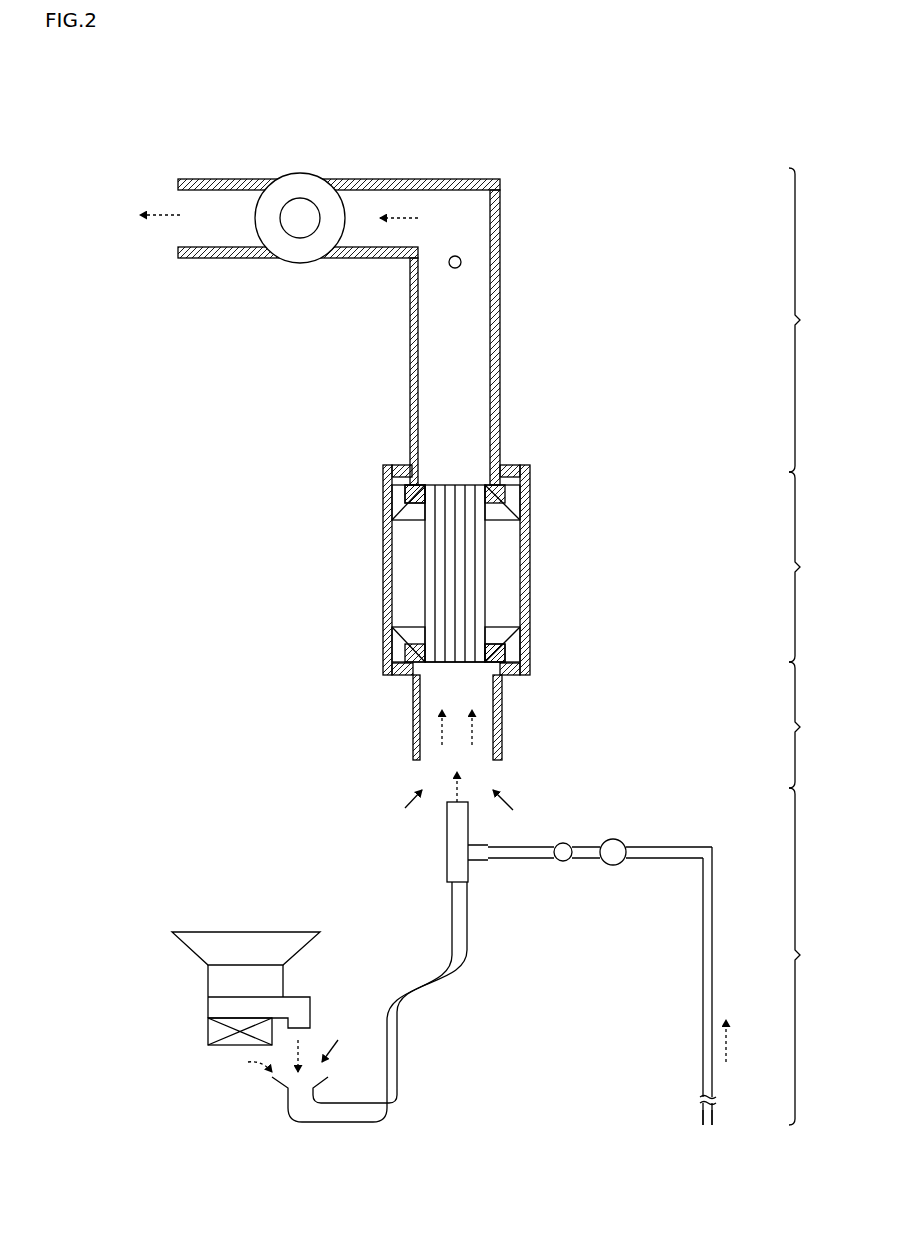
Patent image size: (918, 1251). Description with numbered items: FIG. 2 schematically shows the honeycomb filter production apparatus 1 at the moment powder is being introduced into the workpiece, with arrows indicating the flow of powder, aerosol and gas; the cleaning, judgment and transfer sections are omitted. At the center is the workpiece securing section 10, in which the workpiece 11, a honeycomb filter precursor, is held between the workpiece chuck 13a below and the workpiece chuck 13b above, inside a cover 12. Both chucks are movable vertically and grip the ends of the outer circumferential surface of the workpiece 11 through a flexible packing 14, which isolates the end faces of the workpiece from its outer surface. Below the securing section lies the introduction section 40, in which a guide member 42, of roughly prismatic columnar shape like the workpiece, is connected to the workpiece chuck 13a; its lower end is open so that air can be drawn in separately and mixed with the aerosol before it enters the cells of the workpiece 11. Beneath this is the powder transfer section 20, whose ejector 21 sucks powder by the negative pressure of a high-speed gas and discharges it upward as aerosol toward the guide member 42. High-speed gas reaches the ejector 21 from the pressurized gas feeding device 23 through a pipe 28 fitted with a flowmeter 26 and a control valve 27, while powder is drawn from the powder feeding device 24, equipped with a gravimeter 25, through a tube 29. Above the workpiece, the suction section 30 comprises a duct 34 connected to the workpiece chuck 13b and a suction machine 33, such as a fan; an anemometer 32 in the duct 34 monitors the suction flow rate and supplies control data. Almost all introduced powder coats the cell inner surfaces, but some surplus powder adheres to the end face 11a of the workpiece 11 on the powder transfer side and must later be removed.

The honeycomb filter production apparatus 1 is at (698, 155).
The workpiece securing section 10 is at (813, 567).
The workpiece 11 is at (440, 554).
The end face 11a is at (463, 665).
The cover 12 is at (530, 548).
The workpiece chuck 13a is at (530, 650).
The workpiece chuck 13b is at (525, 506).
The packing 14 is at (405, 500).
The powder transfer section 20 is at (814, 956).
The ejector 21 is at (482, 878).
The pressurized gas feeding device 23 is at (709, 1132).
The powder feeding device 24 is at (230, 930).
The gravimeter 25 is at (225, 1048).
The flowmeter 26 is at (560, 842).
The control valve 27 is at (614, 838).
The pipe 28 is at (703, 980).
The tube 29 is at (428, 995).
The suction section 30 is at (812, 320).
The anemometer 32 is at (461, 262).
The suction machine 33 is at (300, 263).
The duct 34 is at (443, 178).
The introduction section 40 is at (813, 725).
The guide member 42 is at (410, 705).